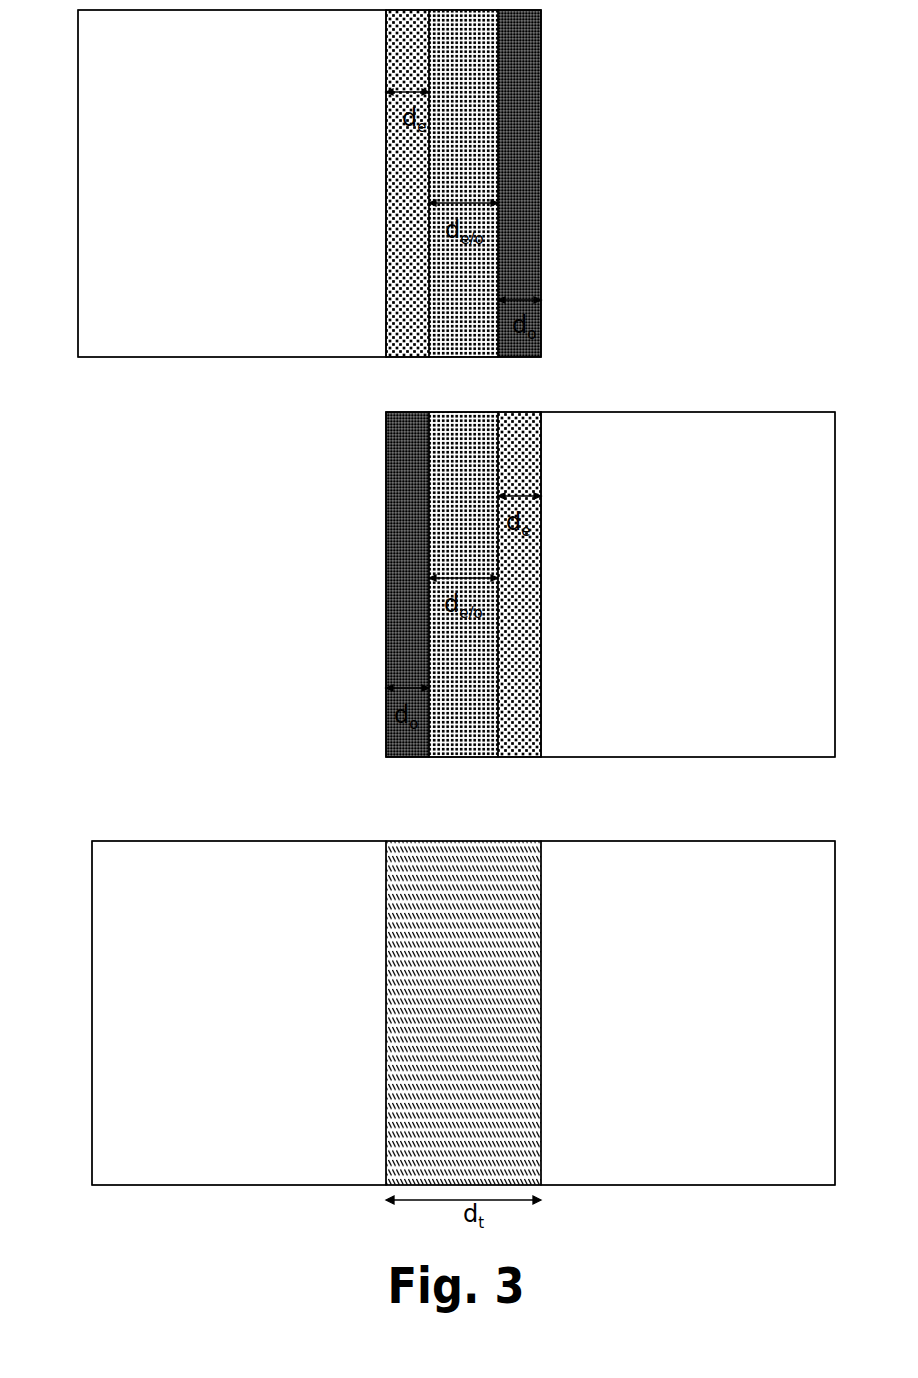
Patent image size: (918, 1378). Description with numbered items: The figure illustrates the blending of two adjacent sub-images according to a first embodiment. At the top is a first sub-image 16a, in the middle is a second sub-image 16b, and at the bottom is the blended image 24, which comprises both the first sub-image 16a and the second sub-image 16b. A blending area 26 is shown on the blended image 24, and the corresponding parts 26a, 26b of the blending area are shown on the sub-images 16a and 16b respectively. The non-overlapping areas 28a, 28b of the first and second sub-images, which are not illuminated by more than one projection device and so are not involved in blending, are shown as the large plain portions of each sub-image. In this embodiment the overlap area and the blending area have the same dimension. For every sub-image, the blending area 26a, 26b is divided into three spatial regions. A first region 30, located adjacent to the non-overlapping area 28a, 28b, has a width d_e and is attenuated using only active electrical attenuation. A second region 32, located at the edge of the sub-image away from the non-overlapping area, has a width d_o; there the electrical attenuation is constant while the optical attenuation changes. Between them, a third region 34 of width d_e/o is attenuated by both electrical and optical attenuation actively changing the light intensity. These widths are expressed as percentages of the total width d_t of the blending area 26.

The first sub-image 16a is at (78, 66).
The second sub-image 16b is at (705, 411).
The blended image 24 is at (198, 840).
The blending area 26 is at (463, 1013).
The blending area of first sub-image 26a is at (386, 358).
The blending area of second sub-image 26b is at (386, 758).
The non-overlapping area of first sub-image 28a is at (232, 597).
The non-overlapping area of second sub-image 28b is at (688, 798).
The first region 30 is at (463, 383).
The second region 32 is at (463, 383).
The third region 34 is at (463, 383).